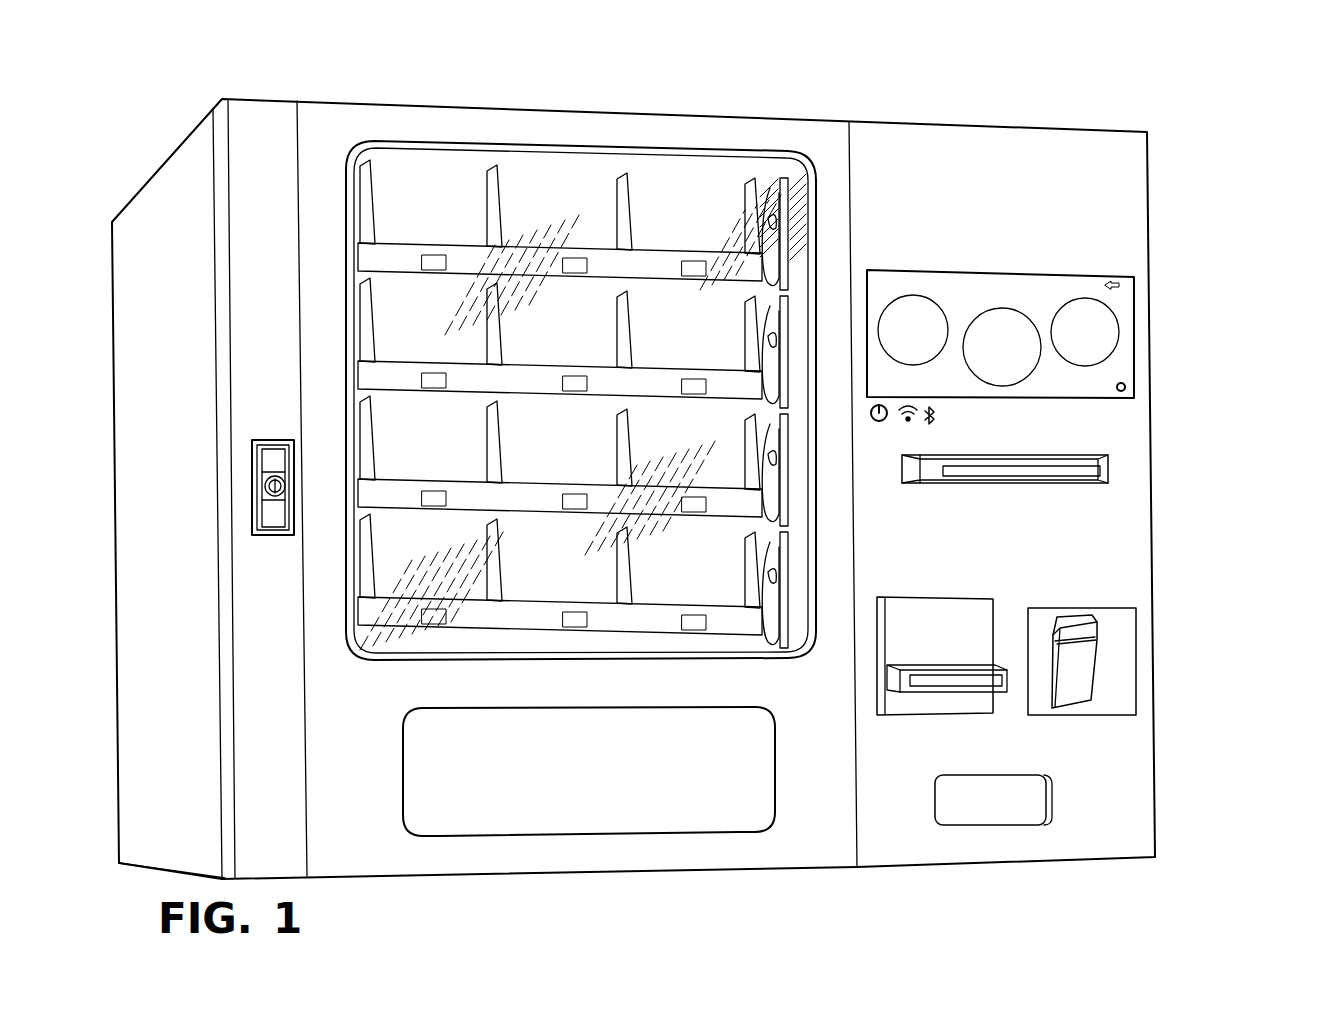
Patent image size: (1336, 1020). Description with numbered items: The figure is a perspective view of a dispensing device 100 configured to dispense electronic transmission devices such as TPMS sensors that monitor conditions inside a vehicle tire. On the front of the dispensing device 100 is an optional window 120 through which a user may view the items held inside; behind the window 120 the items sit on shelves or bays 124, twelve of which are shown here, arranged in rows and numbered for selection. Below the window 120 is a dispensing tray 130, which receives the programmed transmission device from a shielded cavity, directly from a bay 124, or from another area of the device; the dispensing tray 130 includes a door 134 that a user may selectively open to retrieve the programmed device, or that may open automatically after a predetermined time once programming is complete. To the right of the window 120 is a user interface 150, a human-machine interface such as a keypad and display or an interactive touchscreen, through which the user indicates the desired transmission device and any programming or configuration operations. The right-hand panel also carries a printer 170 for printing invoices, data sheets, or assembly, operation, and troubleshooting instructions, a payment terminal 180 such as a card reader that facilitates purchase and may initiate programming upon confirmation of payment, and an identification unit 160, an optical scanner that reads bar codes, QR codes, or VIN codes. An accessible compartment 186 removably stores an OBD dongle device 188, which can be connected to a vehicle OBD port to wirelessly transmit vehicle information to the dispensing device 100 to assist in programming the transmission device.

The dispensing device 100 is at (280, 74).
The window 120 is at (805, 165).
The bay 124 is at (494, 185).
The dispensing tray 130 is at (490, 808).
The door 134 is at (609, 797).
The user interface 150 is at (1128, 307).
The identification unit 160 is at (1000, 797).
The printer 170 is at (1100, 471).
The payment terminal 180 is at (915, 640).
The accessible compartment 186 is at (1145, 653).
The OBD dongle device 188 is at (1082, 683).